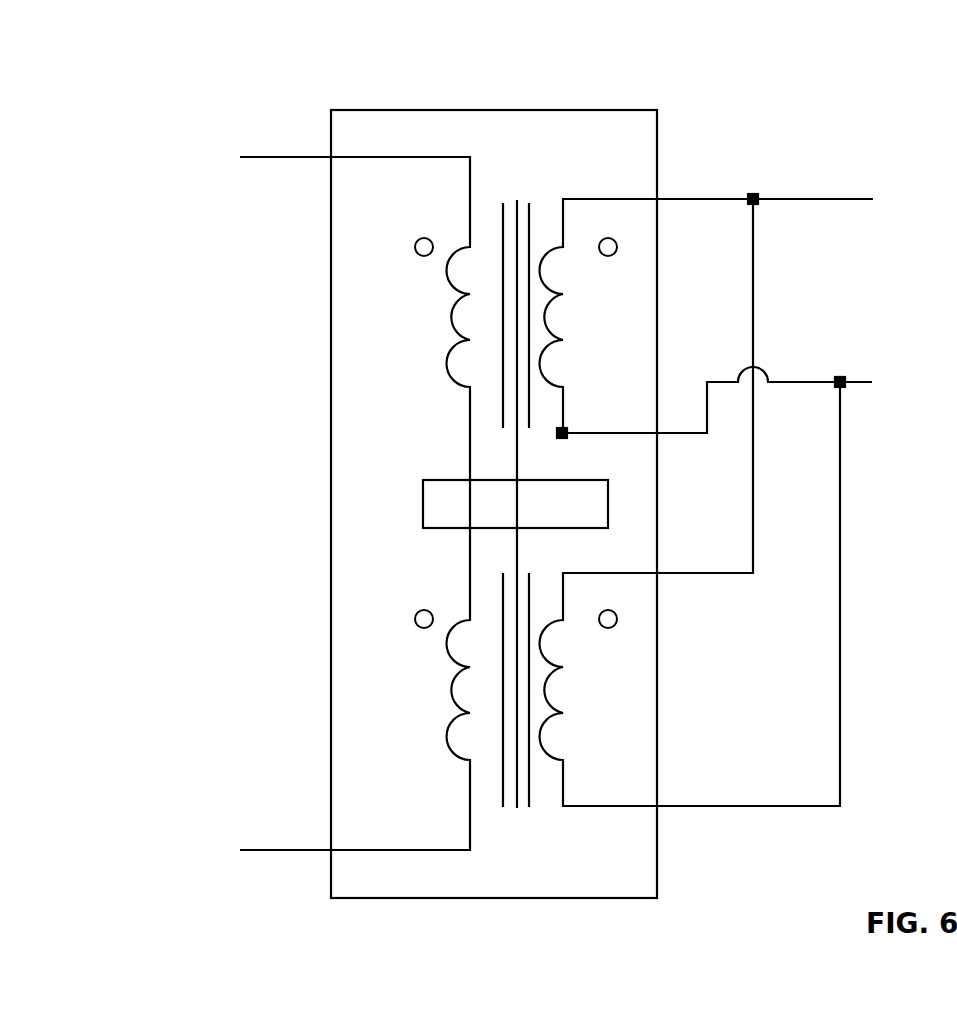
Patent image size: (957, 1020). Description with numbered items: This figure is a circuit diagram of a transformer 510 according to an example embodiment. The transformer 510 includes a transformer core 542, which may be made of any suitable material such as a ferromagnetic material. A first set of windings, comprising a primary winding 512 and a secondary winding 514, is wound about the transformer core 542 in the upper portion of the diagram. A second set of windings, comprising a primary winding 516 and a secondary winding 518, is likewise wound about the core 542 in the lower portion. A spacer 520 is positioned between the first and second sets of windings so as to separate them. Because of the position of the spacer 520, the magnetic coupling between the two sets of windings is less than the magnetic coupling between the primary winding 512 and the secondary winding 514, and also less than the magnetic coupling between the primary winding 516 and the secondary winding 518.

The transformer 510 is at (152, 58).
The primary winding 512 is at (427, 332).
The secondary winding 514 is at (621, 332).
The primary winding 516 is at (427, 725).
The secondary winding 518 is at (621, 725).
The spacer 520 is at (423, 501).
The transformer core 542 is at (516, 203).